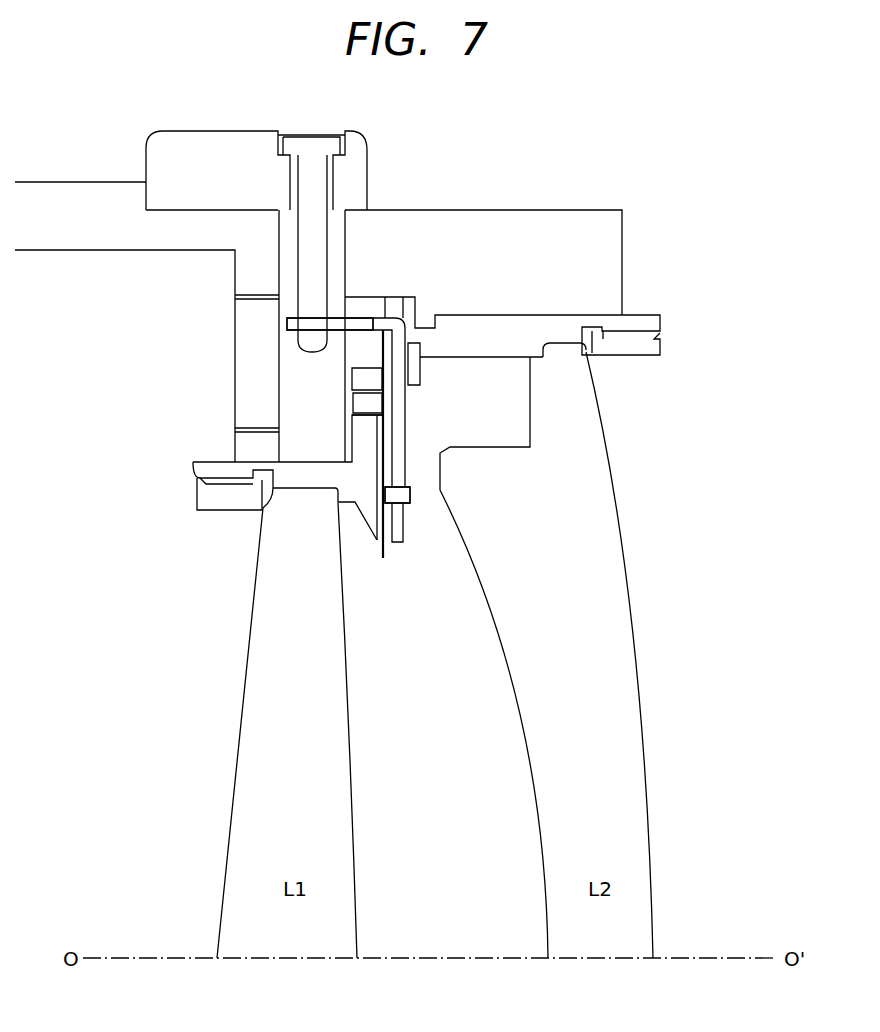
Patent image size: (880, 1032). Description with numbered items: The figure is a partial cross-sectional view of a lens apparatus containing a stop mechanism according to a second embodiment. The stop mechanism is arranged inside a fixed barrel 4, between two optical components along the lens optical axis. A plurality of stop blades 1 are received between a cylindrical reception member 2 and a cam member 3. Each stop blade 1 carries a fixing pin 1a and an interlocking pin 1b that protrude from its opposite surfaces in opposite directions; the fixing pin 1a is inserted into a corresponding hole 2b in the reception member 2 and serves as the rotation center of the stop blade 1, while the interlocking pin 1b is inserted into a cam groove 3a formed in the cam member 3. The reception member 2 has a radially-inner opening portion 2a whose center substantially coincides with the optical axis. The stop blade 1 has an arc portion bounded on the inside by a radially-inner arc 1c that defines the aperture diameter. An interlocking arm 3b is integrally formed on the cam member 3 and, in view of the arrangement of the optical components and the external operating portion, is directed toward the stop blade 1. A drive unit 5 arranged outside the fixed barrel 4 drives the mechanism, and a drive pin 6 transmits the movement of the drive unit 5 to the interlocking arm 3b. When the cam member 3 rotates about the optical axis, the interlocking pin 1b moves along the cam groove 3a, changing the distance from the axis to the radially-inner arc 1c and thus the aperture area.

The stop blade 1 is at (382, 352).
The fixing pin 1a is at (363, 402).
The interlocking pin 1b is at (395, 496).
The radially-inner arc 1c is at (385, 549).
The reception member 2 is at (533, 325).
The radially-inner opening portion 2a is at (380, 543).
The hole 2b is at (368, 418).
The cam member 3 is at (398, 340).
The cam groove 3a is at (410, 476).
The interlocking arm 3b is at (333, 322).
The fixed barrel 4 is at (82, 197).
The drive unit 5 is at (195, 145).
The drive pin 6 is at (300, 278).